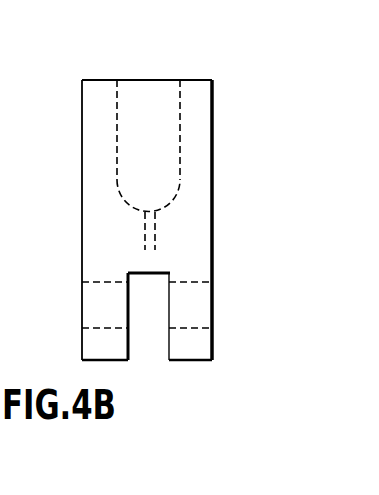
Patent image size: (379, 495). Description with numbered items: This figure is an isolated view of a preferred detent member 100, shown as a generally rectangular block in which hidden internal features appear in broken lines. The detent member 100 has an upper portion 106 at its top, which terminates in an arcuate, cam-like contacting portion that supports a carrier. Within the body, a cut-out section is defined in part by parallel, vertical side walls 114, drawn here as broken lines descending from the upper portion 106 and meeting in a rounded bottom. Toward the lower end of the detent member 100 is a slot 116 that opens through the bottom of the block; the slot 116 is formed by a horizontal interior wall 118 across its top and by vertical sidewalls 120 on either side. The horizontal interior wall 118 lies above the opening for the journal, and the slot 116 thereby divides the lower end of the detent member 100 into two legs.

The detent member 100 is at (217, 182).
The upper portion 106 is at (150, 80).
The vertical side walls 114 is at (176, 124).
The horizontal interior wall 118 is at (155, 276).
The vertical sidewalls 120 is at (130, 345).
The slot 116 is at (167, 343).